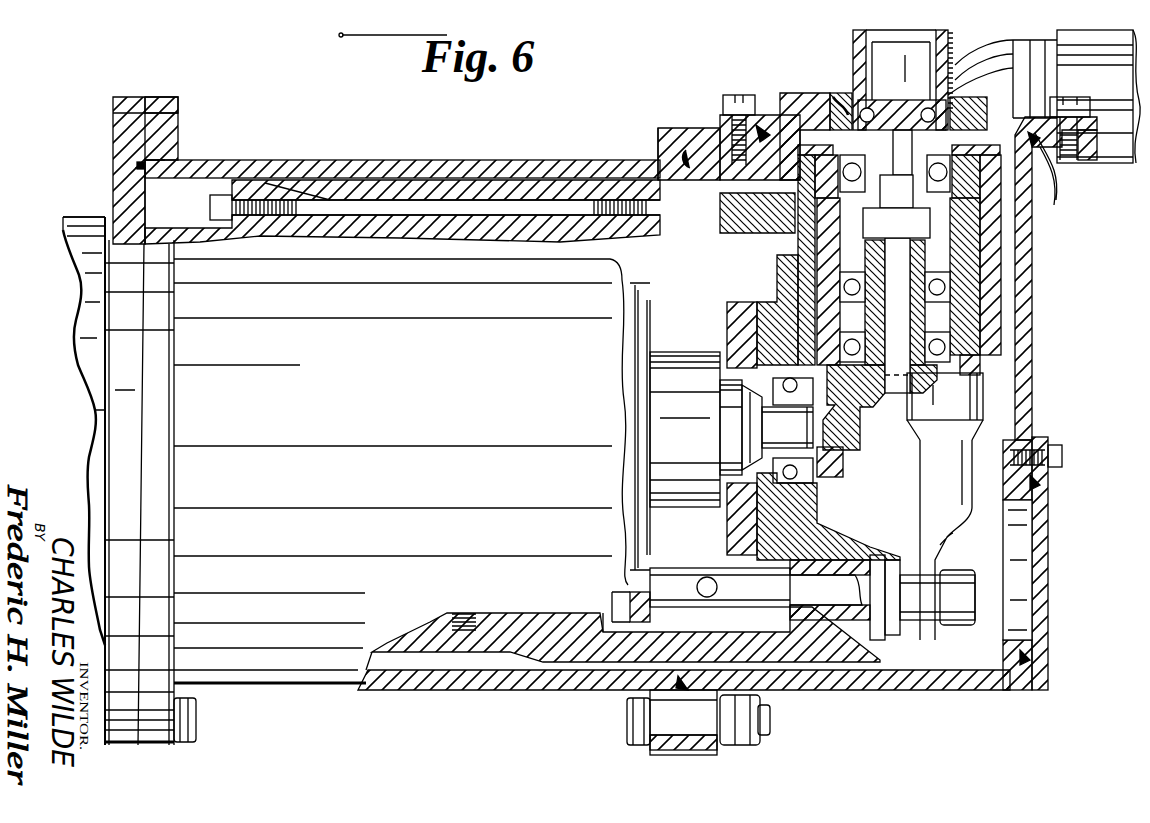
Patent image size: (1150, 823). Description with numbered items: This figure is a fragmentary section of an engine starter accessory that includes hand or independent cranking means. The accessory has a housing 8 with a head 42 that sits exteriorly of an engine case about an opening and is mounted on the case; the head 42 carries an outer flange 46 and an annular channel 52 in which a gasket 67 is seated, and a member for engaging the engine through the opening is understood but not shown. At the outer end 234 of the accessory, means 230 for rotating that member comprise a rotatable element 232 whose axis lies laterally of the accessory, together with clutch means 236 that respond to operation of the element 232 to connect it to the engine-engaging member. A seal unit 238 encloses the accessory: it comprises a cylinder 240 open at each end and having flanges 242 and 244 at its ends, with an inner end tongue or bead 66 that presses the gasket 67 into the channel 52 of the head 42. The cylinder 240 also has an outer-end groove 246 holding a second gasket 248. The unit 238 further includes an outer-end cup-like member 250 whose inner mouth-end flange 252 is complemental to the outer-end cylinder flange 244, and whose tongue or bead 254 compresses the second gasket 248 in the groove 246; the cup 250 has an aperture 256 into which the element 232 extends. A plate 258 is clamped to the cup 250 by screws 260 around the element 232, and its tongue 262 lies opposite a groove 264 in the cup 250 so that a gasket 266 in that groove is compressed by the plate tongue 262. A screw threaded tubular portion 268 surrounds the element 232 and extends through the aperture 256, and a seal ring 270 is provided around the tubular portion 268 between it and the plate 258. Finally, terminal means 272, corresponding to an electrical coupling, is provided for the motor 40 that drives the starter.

The housing 8 is at (70, 160).
The motor 40 is at (664, 306).
The head 42 is at (73, 216).
The outer flange 46 is at (133, 98).
The annular channel 52 is at (136, 164).
The inner end tongue or bead 66 is at (148, 165).
The gasket 67 is at (138, 168).
The means for rotating the member 230 is at (756, 72).
The rotatable element 232 is at (883, 235).
The outer end 234 is at (1032, 279).
The clutch means 236 is at (806, 230).
The seal unit 238 is at (476, 144).
The cylinder 240 is at (376, 160).
The flange 242 is at (166, 98).
The flange 244 is at (692, 145).
The outer-end groove 246 is at (688, 163).
The gasket 248 is at (690, 152).
The outer-end cup-like member 250 is at (1032, 384).
The inner mouth-end flange 252 is at (700, 752).
The tongue or bead 254 is at (698, 132).
The aperture 256 is at (782, 172).
The plate 258 is at (770, 118).
The screws 260 is at (730, 96).
The tongue 262 is at (1048, 135).
The groove 264 is at (1048, 170).
The gasket 266 is at (1040, 140).
The screw threaded tubular portion 268 is at (848, 56).
The seal ring 270 is at (824, 98).
The terminal means 272 is at (958, 60).